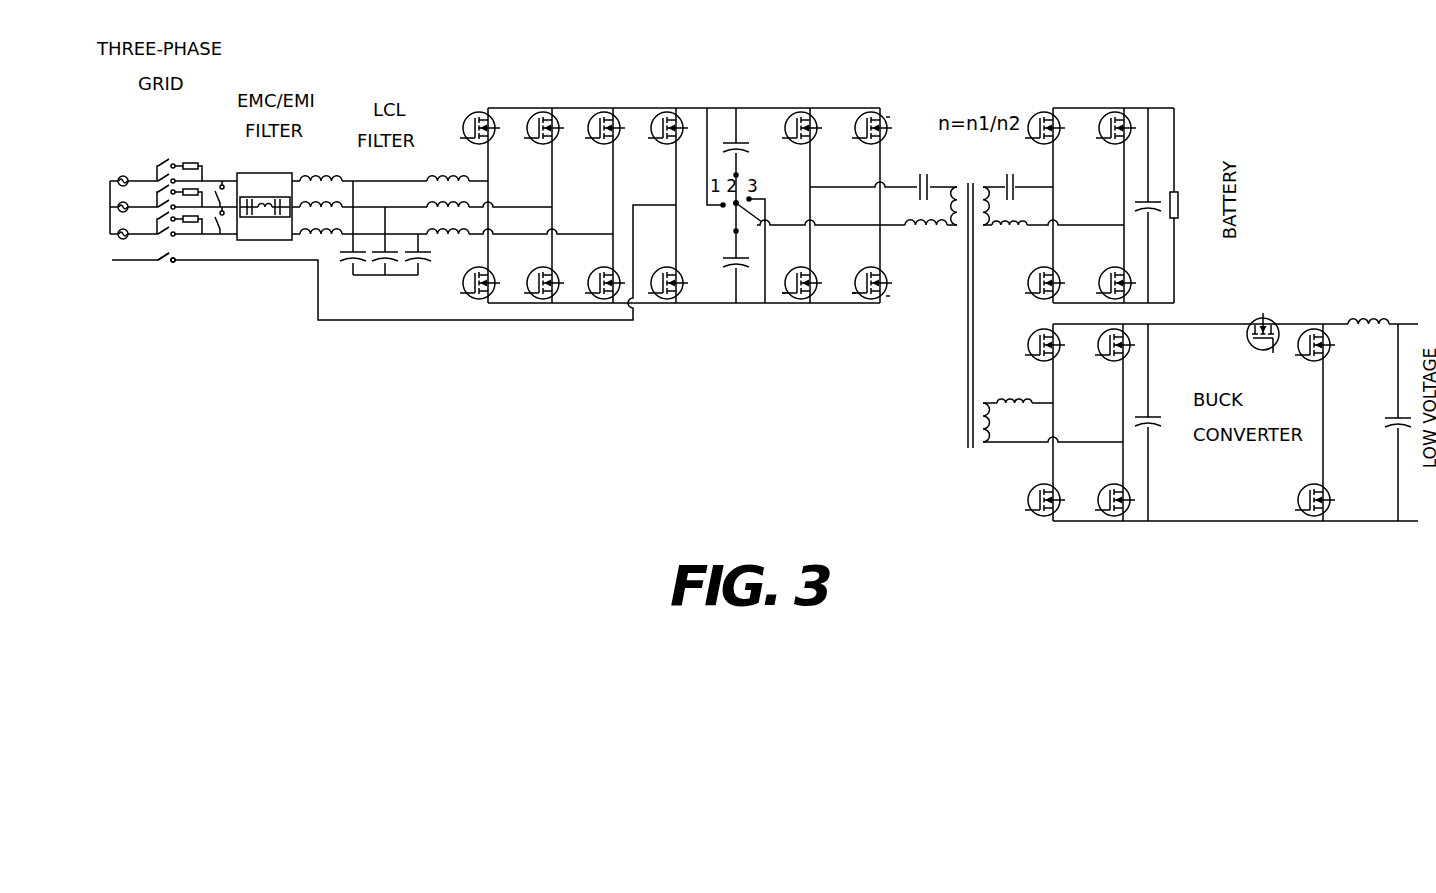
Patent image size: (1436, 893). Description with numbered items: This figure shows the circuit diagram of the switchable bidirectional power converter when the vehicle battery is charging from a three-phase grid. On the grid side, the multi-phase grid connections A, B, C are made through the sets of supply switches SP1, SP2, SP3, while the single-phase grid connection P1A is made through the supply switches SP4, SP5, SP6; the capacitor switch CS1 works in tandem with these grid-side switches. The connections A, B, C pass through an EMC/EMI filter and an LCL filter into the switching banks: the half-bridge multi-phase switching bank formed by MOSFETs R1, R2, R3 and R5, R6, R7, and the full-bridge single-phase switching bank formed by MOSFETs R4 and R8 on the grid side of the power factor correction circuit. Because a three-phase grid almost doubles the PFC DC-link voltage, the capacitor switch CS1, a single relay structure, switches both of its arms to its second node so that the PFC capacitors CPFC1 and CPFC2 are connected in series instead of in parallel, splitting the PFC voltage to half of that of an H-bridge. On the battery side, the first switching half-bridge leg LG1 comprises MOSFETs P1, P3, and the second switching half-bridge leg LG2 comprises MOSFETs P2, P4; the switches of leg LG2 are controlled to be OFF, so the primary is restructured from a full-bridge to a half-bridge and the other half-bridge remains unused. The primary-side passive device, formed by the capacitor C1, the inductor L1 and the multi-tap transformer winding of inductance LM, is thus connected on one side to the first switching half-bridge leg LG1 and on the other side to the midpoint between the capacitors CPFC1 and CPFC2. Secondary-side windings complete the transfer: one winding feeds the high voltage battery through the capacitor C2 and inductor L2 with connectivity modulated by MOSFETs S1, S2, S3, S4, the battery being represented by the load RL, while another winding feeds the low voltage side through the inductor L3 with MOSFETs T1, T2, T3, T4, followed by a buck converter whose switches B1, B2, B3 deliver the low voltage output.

The multi-phase grid connection A is at (121, 177).
The multi-phase grid connection B is at (108, 207).
The multi-phase grid connection C is at (121, 233).
The single-phase grid connection P1A is at (374, 262).
The supply switch SP1 is at (163, 163).
The supply switch SP2 is at (157, 176).
The supply switch SP3 is at (156, 231).
The supply switch SP4 is at (166, 266).
The supply switch SP5 is at (213, 188).
The supply switch SP6 is at (218, 232).
The MOSFET R1 is at (480, 107).
The MOSFET R2 is at (543, 107).
The MOSFET R3 is at (605, 107).
The MOSFET R4 is at (667, 107).
The MOSFET R5 is at (474, 271).
The MOSFET R6 is at (534, 271).
The MOSFET R7 is at (598, 273).
The MOSFET R8 is at (665, 267).
The capacitor switch CS1 is at (796, 205).
The PFC capacitor CPFC1 is at (722, 140).
The PFC capacitor CPFC2 is at (725, 270).
The MOSFET P1 is at (788, 127).
The MOSFET P2 is at (857, 127).
The MOSFET P3 is at (798, 267).
The MOSFET P4 is at (866, 267).
The first switching half-bridge leg LG1 is at (797, 314).
The second switching half-bridge leg LG2 is at (870, 314).
The off state OFF is at (887, 118).
The capacitor C1 is at (927, 166).
The inductor L1 is at (926, 244).
The transformer winding inductance LM is at (957, 218).
The capacitor C2 is at (1009, 166).
The inductor L2 is at (1010, 244).
The MOSFET S1 is at (1045, 107).
The MOSFET S2 is at (1116, 107).
The MOSFET S3 is at (1045, 267).
The MOSFET S4 is at (1111, 267).
The battery load resistance RL is at (1190, 207).
The inductor L3 is at (1014, 420).
The MOSFET T1 is at (1033, 348).
The MOSFET T2 is at (1103, 348).
The MOSFET T3 is at (1033, 493).
The MOSFET T4 is at (1103, 493).
The buck converter switch B1 is at (1263, 315).
The buck converter switch B2 is at (1315, 319).
The buck converter switch B3 is at (1305, 486).